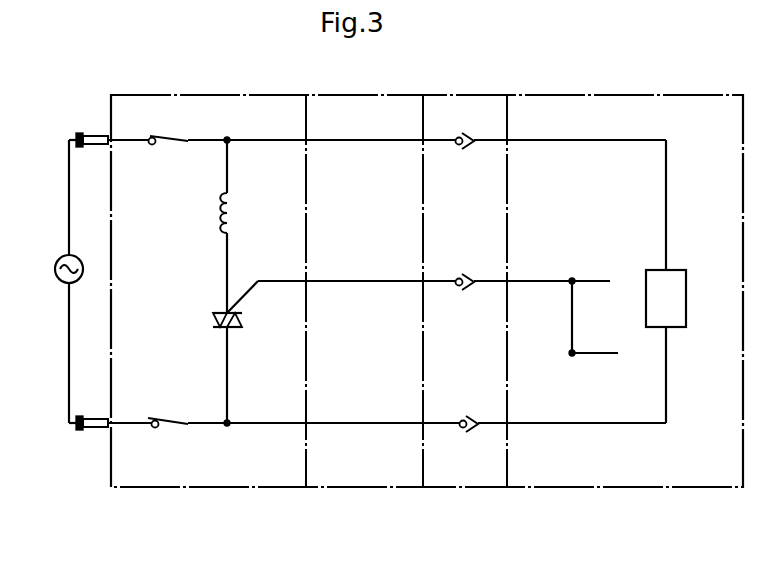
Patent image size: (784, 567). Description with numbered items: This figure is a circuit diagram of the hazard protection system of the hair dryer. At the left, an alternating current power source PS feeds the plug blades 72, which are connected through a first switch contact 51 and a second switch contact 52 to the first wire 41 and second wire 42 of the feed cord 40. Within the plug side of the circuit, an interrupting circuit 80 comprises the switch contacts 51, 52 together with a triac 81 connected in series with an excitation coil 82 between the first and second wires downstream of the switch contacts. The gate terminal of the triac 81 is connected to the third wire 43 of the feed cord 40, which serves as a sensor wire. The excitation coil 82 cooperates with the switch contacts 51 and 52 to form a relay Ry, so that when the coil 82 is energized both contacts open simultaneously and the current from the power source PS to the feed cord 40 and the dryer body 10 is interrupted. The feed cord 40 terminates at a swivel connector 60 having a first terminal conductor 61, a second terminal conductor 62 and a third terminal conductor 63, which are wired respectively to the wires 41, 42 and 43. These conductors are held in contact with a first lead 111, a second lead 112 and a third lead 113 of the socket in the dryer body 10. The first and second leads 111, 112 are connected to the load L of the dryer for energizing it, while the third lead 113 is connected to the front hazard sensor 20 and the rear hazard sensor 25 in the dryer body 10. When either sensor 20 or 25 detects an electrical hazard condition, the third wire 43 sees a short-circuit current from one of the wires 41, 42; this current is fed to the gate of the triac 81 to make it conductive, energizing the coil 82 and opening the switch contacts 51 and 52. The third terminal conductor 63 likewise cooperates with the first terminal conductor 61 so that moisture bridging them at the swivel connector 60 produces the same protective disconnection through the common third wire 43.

The dryer body 10 is at (612, 487).
The front hazard sensor 20 is at (600, 278).
The rear hazard sensor 25 is at (600, 356).
The feed cord 40 is at (368, 487).
The first wire 41 is at (357, 143).
The second wire 42 is at (332, 420).
The third wire 43 is at (355, 284).
The first switch contact 51 is at (173, 138).
The second switch contact 52 is at (178, 432).
The swivel connector 60 is at (474, 487).
The first terminal conductor 61 is at (446, 143).
The second terminal conductor 62 is at (438, 426).
The third terminal conductor 63 is at (437, 284).
The blades 72 is at (97, 133).
The interrupting circuit 80 is at (254, 487).
The triac 81 is at (242, 325).
The excitation coil 82 is at (220, 214).
The first lead 111 is at (466, 135).
The second lead 112 is at (468, 417).
The third lead 113 is at (466, 275).
The alternating current power source PS is at (63, 283).
The relay Ry is at (140, 452).
The load L is at (686, 292).